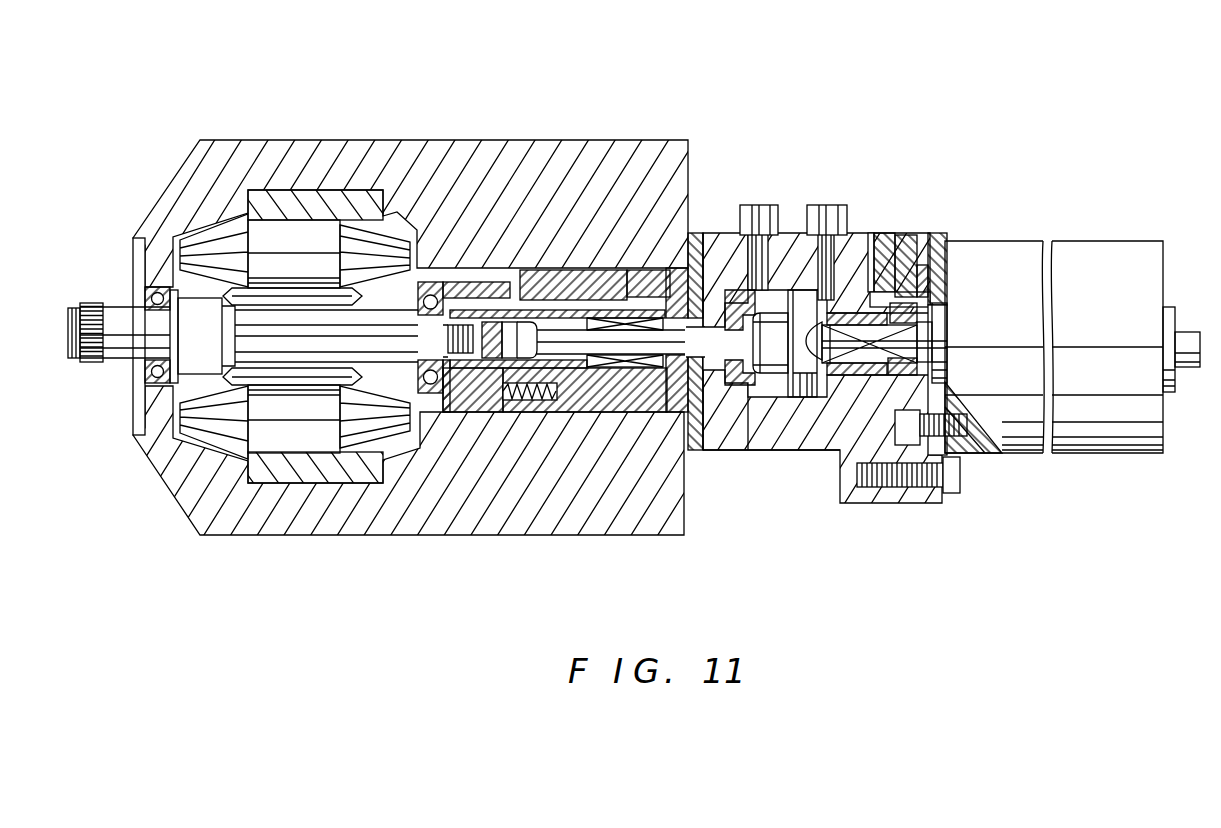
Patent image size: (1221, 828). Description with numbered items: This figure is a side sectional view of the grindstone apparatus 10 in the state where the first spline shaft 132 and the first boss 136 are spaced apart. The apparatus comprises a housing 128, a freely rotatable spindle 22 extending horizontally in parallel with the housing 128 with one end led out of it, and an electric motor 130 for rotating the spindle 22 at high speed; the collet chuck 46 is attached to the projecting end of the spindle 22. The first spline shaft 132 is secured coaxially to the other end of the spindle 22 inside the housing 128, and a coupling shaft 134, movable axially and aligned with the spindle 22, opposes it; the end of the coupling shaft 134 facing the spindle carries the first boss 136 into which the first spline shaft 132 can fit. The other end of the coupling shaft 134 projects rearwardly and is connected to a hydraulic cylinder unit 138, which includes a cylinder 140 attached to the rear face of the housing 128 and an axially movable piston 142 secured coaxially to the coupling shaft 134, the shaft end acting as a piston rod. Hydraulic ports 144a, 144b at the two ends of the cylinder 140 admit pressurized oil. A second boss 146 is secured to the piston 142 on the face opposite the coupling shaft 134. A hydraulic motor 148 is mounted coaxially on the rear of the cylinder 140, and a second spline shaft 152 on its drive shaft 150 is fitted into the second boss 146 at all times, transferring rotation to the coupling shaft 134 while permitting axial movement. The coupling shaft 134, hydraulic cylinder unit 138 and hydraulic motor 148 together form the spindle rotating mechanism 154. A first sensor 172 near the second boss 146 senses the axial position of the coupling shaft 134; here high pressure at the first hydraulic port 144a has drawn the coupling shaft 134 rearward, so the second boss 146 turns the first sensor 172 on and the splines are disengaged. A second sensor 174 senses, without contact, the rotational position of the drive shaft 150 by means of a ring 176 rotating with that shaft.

The grindstone apparatus 10 is at (687, 147).
The spindle 22 is at (125, 342).
The collet chuck 46 is at (90, 305).
The housing 128 is at (604, 158).
The electric motor 130 is at (292, 252).
The first spline shaft 132 is at (462, 347).
The coupling shaft 134 is at (707, 352).
The first boss 136 is at (497, 352).
The hydraulic cylinder unit 138 is at (871, 234).
The cylinder 140 is at (818, 430).
The piston 142 is at (800, 378).
The first hydraulic port 144a is at (753, 202).
The second hydraulic port 144b is at (826, 202).
The second boss 146 is at (845, 378).
The hydraulic motor 148 is at (1087, 252).
The drive shaft 150 is at (930, 352).
The second spline shaft 152 is at (877, 330).
The spindle rotating mechanism 154 is at (940, 508).
The first sensor 172 is at (875, 292).
The second sensor 174 is at (930, 289).
The ring 176 is at (960, 440).